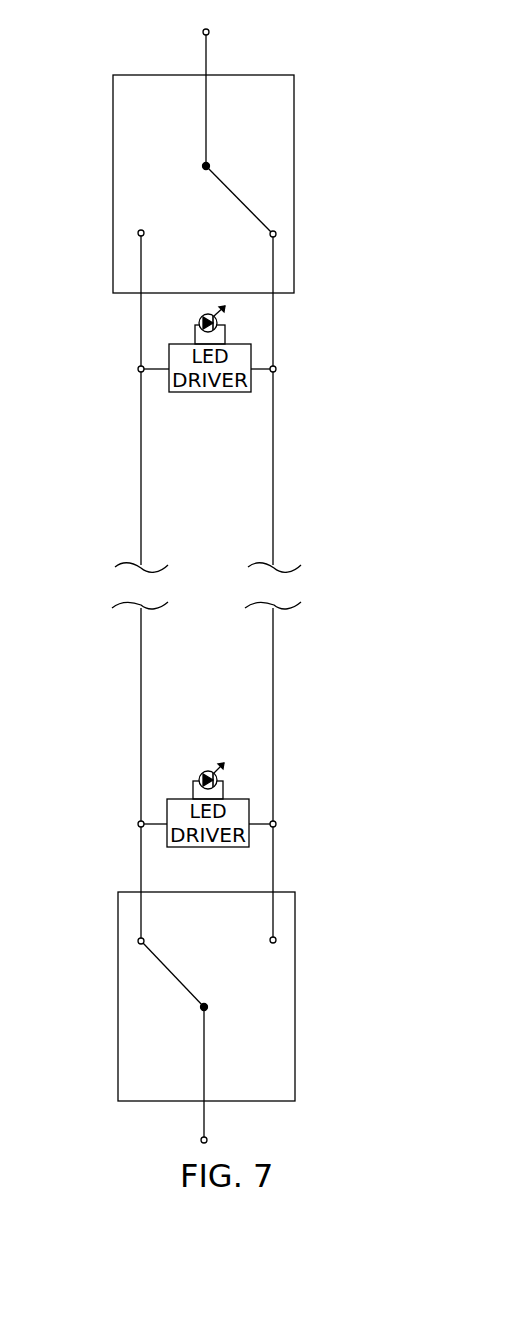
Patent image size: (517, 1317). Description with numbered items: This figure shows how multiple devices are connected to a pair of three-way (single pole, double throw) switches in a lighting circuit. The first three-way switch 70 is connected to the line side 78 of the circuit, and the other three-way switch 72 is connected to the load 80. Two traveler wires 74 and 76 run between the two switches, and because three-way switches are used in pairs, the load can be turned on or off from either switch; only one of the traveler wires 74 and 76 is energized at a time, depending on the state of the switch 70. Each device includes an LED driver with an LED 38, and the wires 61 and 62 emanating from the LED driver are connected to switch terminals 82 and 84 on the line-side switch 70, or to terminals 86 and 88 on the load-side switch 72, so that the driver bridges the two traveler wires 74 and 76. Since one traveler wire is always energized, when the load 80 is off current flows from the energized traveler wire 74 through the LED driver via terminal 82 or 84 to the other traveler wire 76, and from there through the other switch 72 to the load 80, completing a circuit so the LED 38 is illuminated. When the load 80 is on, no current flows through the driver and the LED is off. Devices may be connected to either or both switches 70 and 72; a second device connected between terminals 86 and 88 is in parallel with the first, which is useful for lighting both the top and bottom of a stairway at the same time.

The LED 38 is at (200, 322).
The wire 61 is at (158, 373).
The wire 62 is at (258, 373).
The 3-way switch 70 is at (118, 916).
The 3-way switch 72 is at (112, 83).
The traveler wire 74 is at (140, 462).
The traveler wire 76 is at (275, 467).
The line side 78 is at (201, 1140).
The load 80 is at (203, 32).
The switch terminal 82 is at (137, 824).
The switch terminal 84 is at (277, 822).
The terminal 86 is at (138, 369).
The terminal 88 is at (276, 368).